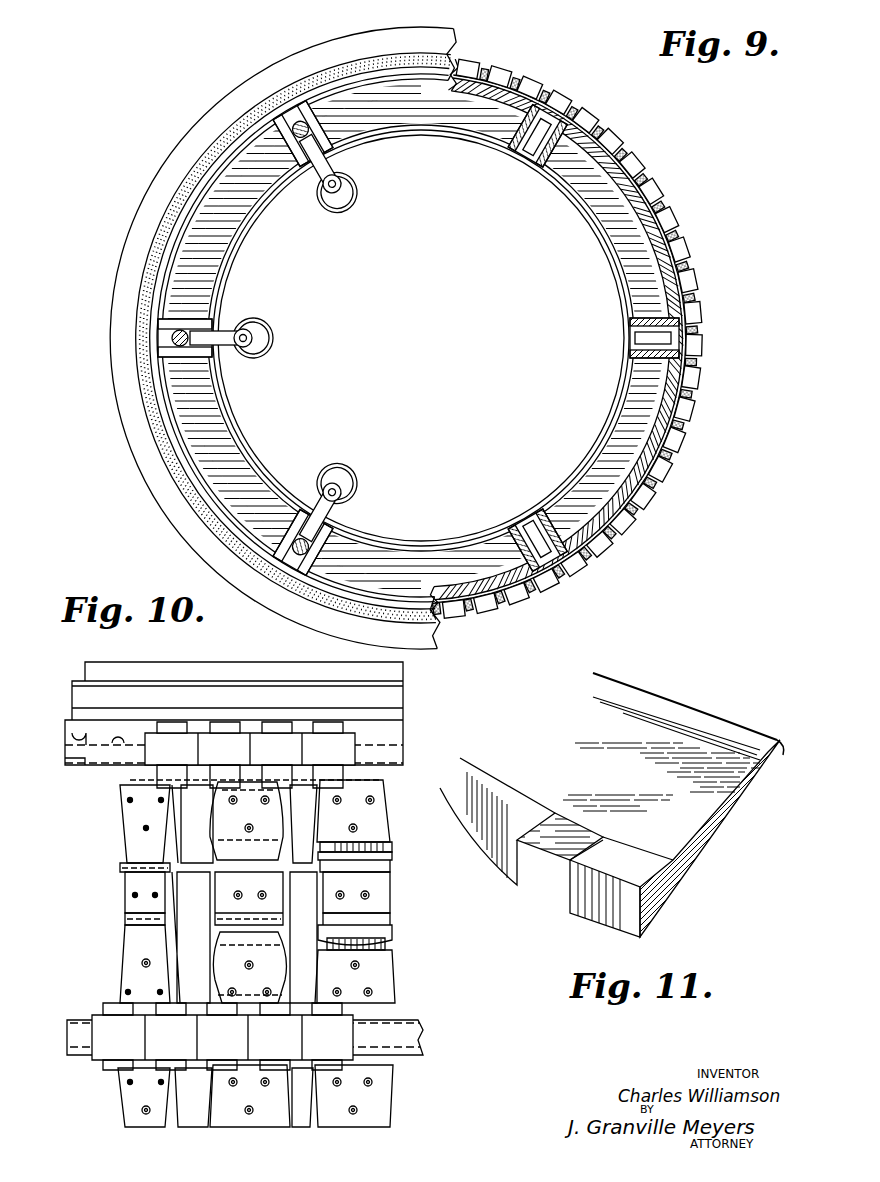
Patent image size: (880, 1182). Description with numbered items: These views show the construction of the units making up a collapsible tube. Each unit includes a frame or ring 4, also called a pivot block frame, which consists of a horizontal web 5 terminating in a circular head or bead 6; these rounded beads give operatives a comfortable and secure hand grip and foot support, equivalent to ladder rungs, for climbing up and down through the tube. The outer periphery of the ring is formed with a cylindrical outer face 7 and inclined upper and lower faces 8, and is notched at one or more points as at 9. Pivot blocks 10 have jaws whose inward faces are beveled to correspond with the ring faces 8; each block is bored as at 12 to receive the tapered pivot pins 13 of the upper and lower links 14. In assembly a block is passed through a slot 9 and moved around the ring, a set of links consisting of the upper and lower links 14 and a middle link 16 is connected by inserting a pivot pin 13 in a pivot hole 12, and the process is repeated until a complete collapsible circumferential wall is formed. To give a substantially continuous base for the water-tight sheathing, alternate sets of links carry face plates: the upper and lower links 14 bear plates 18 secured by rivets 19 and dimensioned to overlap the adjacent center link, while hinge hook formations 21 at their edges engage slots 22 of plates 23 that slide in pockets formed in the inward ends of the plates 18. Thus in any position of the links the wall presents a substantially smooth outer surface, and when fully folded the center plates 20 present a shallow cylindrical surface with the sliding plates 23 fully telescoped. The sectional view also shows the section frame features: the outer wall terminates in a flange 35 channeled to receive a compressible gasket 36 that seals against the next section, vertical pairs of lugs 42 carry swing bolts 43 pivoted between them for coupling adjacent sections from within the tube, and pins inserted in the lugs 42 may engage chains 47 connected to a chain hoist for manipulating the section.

In FIG. 9, the frame or ring 4 is at (630, 252).
In FIG. 11, the frame or ring 4 is at (622, 737).
In FIG. 9, the horizontal web 5 is at (600, 242).
In FIG. 11, the horizontal web 5 is at (651, 728).
In FIG. 11, the circular head or bead 6 is at (737, 728).
In FIG. 10, the cylindrical outer face 7 is at (398, 753).
In FIG. 11, the cylindrical outer face 7 is at (622, 910).
In FIG. 9, the inclined upper and lower faces 8 is at (612, 519).
In FIG. 10, the inclined upper and lower faces 8 is at (118, 745).
In FIG. 11, the inclined upper and lower faces 8 is at (490, 803).
In FIG. 9, the notch or slot 9 is at (637, 504).
In FIG. 10, the notch or slot 9 is at (70, 733).
In FIG. 11, the notch or slot 9 is at (565, 852).
In FIG. 9, the pivot block 10 is at (678, 444).
In FIG. 10, the pivot block 10 is at (277, 730).
In FIG. 10, the pivot hole 12 is at (185, 775).
In FIG. 9, the pivot pin 13 is at (670, 458).
In FIG. 10, the pivot pin 13 is at (120, 777).
In FIG. 10, the upper and lower links 14 is at (130, 823).
In FIG. 9, the middle link 16 is at (620, 302).
In FIG. 10, the middle link 16 is at (147, 885).
In FIG. 10, the plate 18 is at (283, 813).
In FIG. 10, the rivet 19 is at (144, 830).
In FIG. 10, the center plate 20 is at (377, 895).
In FIG. 10, the hinge hook formation 21 is at (367, 870).
In FIG. 10, the slot 22 is at (362, 932).
In FIG. 10, the sliding plate 23 is at (363, 862).
In FIG. 9, the flange 35 is at (426, 646).
In FIG. 9, the compressible gasket 36 is at (202, 523).
In FIG. 9, the lug 42 is at (526, 158).
In FIG. 9, the swing bolt 43 is at (299, 132).
In FIG. 9, the chain 47 is at (323, 205).